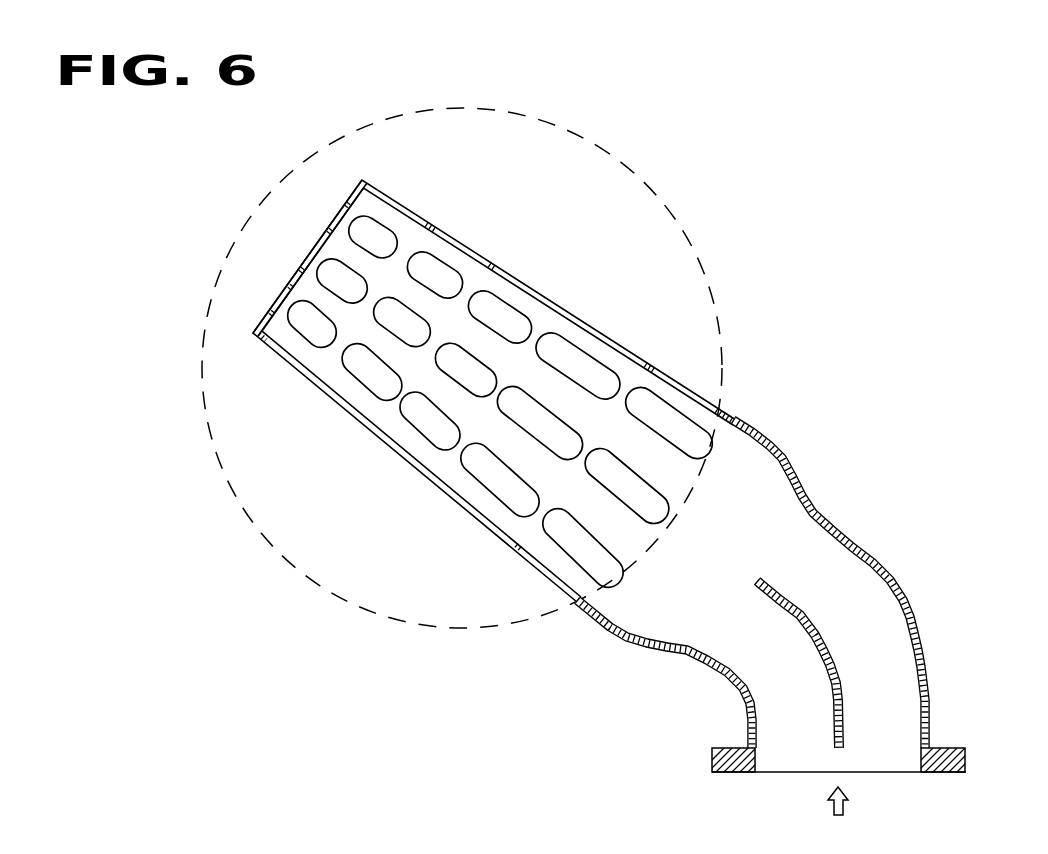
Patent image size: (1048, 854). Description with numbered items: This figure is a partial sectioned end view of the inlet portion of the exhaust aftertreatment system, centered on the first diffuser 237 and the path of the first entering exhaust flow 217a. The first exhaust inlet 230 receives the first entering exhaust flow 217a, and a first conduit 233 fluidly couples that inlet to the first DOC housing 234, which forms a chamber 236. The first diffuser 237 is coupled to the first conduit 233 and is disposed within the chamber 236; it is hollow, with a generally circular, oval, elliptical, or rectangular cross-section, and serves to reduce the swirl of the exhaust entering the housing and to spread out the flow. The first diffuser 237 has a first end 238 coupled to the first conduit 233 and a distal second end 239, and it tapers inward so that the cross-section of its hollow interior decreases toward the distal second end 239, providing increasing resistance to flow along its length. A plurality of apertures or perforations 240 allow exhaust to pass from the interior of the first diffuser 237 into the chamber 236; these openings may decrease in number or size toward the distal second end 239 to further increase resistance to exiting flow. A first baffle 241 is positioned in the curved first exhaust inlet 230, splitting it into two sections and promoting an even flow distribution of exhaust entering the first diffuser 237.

The first entering exhaust flow 217a is at (845, 807).
The first exhaust inlet 230 is at (895, 773).
The first conduit 233 is at (895, 645).
The first DOC housing 234 is at (717, 334).
The chamber 236 is at (494, 357).
The first diffuser 237 is at (408, 207).
The first end 238 is at (742, 487).
The distal second end 239 is at (346, 184).
The apertures or perforations 240 is at (573, 563).
The first baffle 241 is at (803, 613).